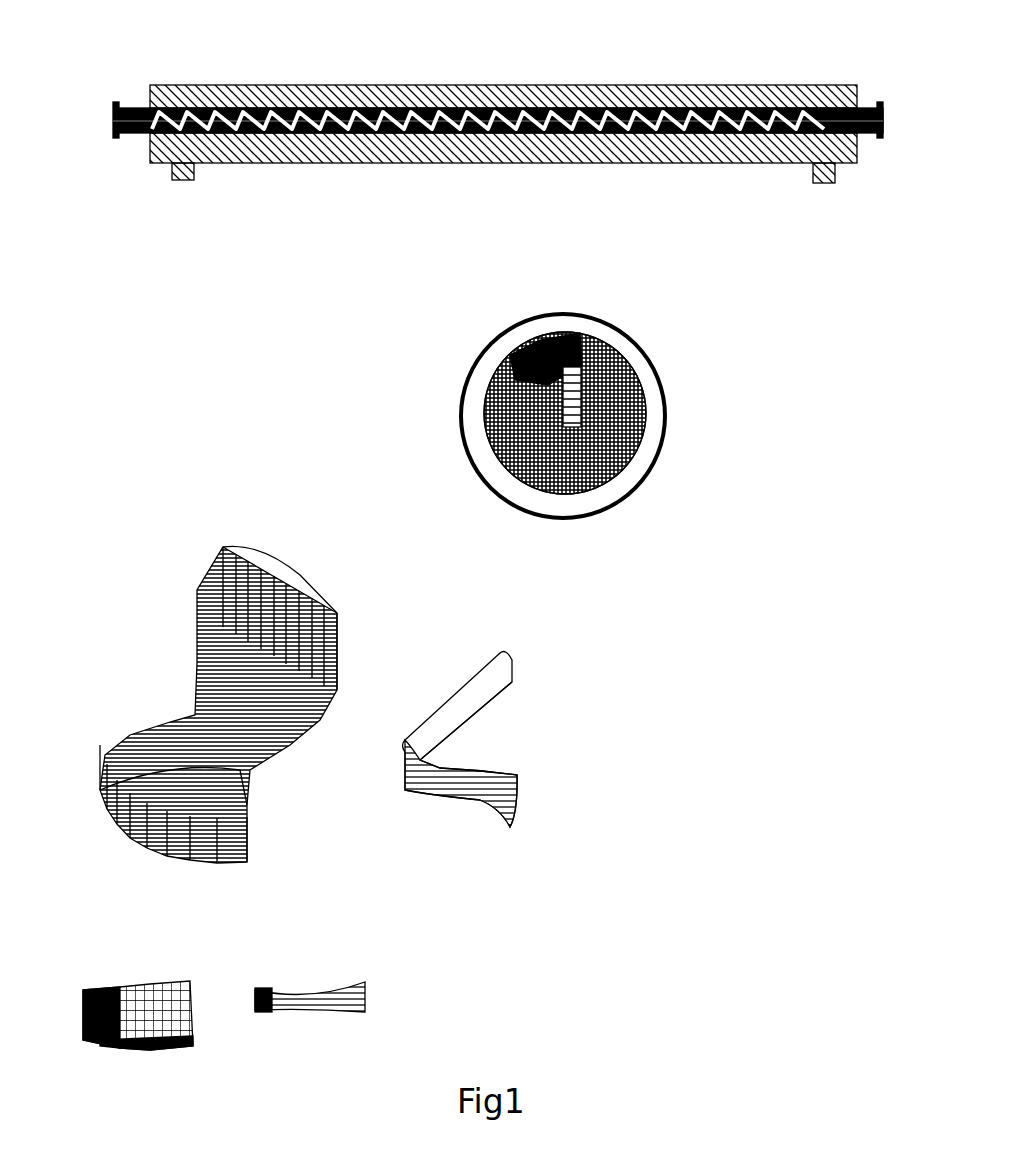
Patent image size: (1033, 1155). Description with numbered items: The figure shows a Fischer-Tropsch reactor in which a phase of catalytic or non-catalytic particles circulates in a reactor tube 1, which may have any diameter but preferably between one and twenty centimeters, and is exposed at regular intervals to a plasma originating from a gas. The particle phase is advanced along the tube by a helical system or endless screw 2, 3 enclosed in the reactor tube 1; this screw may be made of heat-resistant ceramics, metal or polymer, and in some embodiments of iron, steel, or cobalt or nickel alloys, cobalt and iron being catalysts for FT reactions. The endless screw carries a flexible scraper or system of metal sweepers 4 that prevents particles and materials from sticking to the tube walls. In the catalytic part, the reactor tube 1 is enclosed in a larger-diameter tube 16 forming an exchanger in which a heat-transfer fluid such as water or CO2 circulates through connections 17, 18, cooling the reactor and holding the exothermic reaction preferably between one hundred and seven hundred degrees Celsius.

The reactor tube 1 is at (460, 407).
The exchanger tube 16 is at (525, 85).
The heat-transfer fluid circulation 17 is at (818, 195).
The heat-transfer fluid circulation 18 is at (187, 183).
The endless screw 2 is at (347, 618).
The helical system 3 is at (728, 140).
The metal sweepers 4 is at (88, 998).